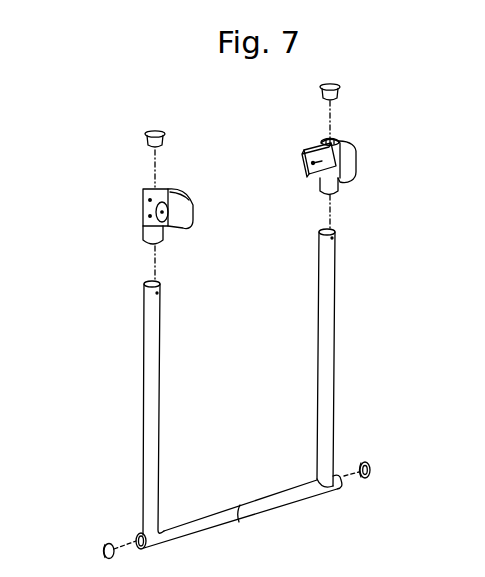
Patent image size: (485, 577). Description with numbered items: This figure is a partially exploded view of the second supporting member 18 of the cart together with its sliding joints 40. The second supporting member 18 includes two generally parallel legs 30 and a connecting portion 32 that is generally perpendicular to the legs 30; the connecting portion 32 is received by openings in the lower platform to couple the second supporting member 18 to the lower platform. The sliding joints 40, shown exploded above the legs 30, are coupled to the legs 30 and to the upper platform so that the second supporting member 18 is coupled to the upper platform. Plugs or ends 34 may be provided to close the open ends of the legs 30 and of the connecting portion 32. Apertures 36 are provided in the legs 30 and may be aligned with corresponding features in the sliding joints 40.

The second supporting member 18 is at (382, 277).
The legs 30 is at (153, 363).
The connecting portion 32 is at (273, 495).
The plugs or ends 34 is at (167, 142).
The apertures 36 is at (320, 244).
The sliding joints 40 is at (147, 211).